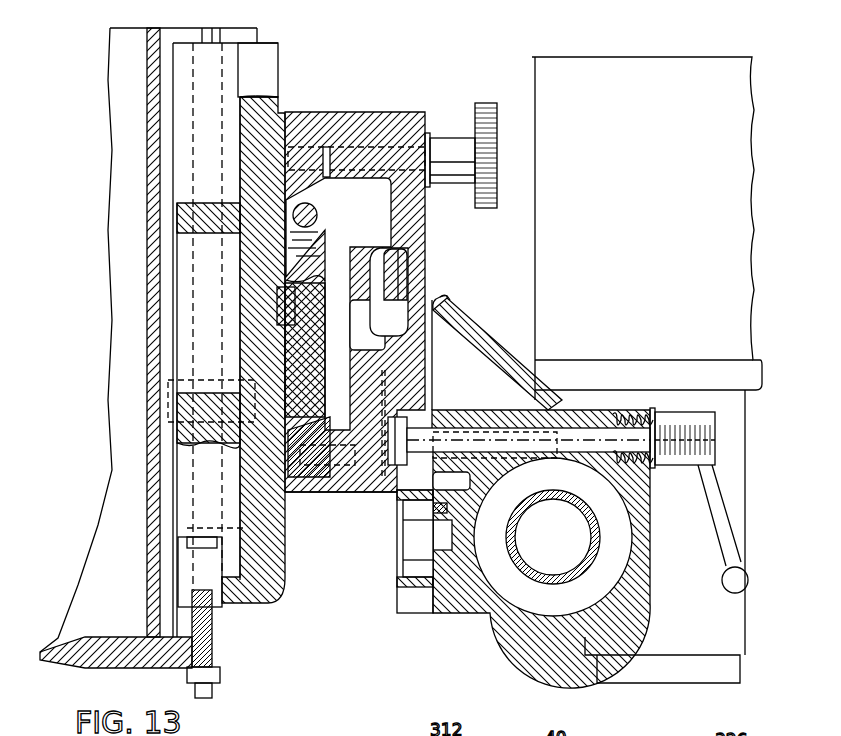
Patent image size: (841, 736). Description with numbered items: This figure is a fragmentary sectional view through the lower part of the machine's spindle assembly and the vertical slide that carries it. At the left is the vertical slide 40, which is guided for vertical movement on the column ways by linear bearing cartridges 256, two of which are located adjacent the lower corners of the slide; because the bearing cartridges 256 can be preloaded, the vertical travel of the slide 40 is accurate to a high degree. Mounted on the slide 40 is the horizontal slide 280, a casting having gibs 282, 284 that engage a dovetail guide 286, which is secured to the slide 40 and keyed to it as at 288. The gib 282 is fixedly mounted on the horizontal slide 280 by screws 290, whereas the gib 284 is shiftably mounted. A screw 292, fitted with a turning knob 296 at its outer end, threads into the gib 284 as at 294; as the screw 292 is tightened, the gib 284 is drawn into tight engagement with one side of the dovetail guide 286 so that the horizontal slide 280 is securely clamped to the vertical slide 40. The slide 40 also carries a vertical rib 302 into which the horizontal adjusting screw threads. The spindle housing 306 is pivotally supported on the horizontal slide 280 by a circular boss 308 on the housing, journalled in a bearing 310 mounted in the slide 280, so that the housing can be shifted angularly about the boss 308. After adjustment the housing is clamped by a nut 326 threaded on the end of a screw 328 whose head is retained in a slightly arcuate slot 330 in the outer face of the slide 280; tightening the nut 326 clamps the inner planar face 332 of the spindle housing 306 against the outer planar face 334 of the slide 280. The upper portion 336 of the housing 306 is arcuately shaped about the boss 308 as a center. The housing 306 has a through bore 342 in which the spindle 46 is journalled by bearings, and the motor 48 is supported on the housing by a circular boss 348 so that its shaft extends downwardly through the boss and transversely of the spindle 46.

The slide 40 is at (270, 80).
The spindle 46 is at (553, 573).
The motor 48 is at (633, 138).
The linear bearing cartridges 256 is at (173, 399).
The horizontal slide 280 is at (392, 113).
The gib 282 is at (310, 428).
The gib 284 is at (312, 182).
The dovetail guide 286 is at (297, 352).
The key 288 is at (282, 290).
The screws 290 is at (310, 488).
The screw 292 is at (427, 122).
The threaded connection 294 is at (327, 145).
The turning knob 296 is at (493, 195).
The vertical rib 302 is at (325, 250).
The spindle housing 306 is at (478, 333).
The circular boss 308 is at (413, 556).
The bearing 310 is at (397, 582).
The nut 326 is at (695, 413).
The screw 328 is at (557, 433).
The arcuate slot 330 is at (397, 413).
The inner planar face 332 is at (405, 306).
The outer planar face 334 is at (433, 348).
The upper portion 336 is at (447, 310).
The through bore 342 is at (532, 607).
The circular boss 348 is at (702, 526).